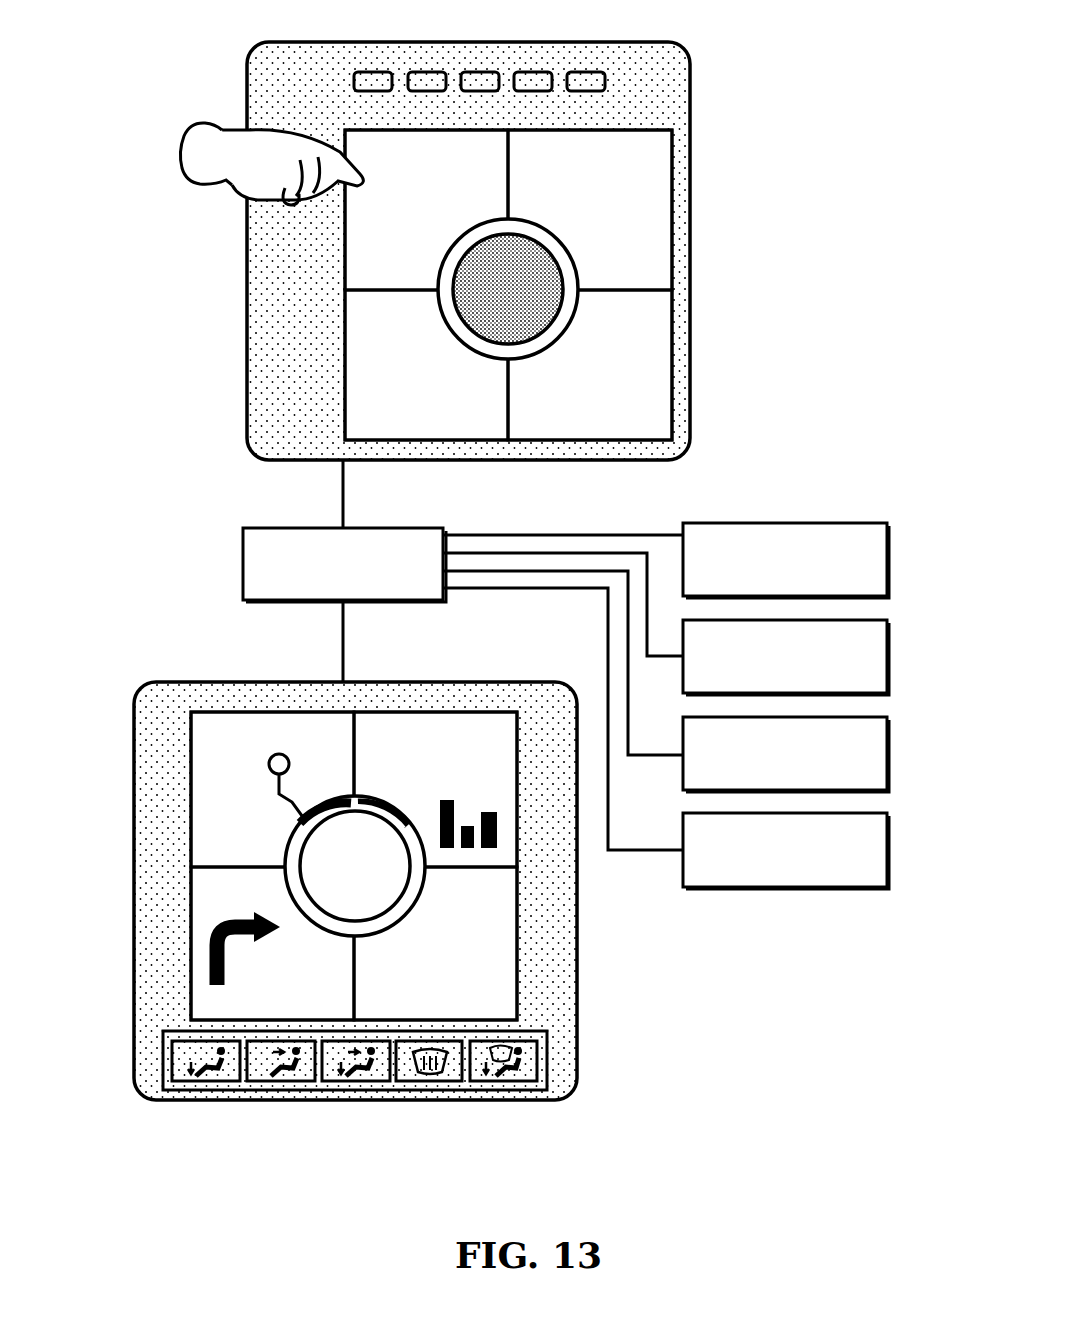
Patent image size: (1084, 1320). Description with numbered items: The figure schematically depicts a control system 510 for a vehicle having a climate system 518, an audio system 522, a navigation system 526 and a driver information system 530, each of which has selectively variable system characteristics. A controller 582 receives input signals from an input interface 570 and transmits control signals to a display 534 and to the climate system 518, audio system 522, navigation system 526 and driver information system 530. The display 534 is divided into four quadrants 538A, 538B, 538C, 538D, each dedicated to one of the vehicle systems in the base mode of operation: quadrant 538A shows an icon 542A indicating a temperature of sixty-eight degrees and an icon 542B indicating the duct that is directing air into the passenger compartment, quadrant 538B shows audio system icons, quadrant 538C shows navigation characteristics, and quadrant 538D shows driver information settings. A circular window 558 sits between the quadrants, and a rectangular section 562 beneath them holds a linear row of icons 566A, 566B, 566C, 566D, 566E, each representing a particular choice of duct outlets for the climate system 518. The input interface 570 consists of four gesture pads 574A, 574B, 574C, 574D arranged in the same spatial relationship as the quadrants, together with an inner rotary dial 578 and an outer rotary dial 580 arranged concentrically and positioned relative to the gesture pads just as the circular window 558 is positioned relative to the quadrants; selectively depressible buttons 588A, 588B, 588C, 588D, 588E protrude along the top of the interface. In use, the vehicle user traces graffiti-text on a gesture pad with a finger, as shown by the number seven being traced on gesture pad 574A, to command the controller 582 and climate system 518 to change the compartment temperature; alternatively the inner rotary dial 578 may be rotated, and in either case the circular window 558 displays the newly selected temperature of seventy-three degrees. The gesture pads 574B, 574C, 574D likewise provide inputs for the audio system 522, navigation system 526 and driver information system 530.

The control system 510 is at (155, 182).
The climate system 518 is at (888, 560).
The audio system 522 is at (888, 656).
The navigation system 526 is at (888, 757).
The driver information system 530 is at (888, 850).
The display 534 is at (116, 803).
The quadrant 538A is at (208, 832).
The quadrant 538B is at (463, 732).
The quadrant 538C is at (210, 928).
The quadrant 538D is at (507, 893).
The icon 542A is at (210, 750).
The icon 542B is at (279, 752).
The circular window 558 is at (318, 885).
The rectangular section 562 is at (540, 1055).
The icon 566A is at (212, 1080).
The icon 566B is at (285, 1080).
The icon 566C is at (360, 1080).
The icon 566D is at (445, 1080).
The icon 566E is at (515, 1080).
The input interface 570 is at (226, 333).
The gesture pad 574A is at (369, 150).
The gesture pad 574B is at (645, 174).
The gesture pad 574C is at (372, 402).
The gesture pad 574D is at (622, 400).
The inner rotary dial 578 is at (545, 280).
The outer rotary dial 580 is at (565, 314).
The controller 582 is at (255, 556).
The button 588A is at (374, 78).
The button 588B is at (428, 78).
The button 588C is at (481, 78).
The button 588D is at (534, 78).
The button 588E is at (587, 78).